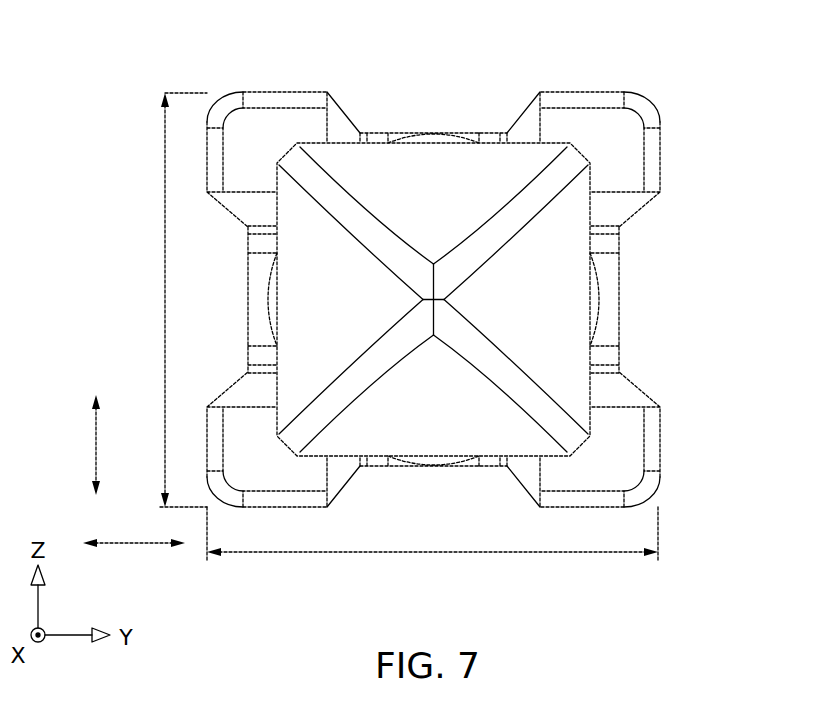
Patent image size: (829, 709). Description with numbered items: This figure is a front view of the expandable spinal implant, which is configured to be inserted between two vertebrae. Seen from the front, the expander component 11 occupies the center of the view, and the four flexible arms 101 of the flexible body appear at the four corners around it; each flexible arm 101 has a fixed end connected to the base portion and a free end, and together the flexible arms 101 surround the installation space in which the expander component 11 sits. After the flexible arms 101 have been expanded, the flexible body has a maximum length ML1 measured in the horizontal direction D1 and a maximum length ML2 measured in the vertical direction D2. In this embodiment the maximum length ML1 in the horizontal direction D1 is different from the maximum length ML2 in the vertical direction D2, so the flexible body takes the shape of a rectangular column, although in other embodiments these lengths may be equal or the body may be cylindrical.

The flexible arm 101 is at (582, 103).
The expander component 11 is at (562, 296).
The maximum length in the horizontal direction ML1 is at (432, 546).
The maximum length in the vertical direction ML2 is at (157, 300).
The horizontal direction D1 is at (134, 556).
The vertical direction D2 is at (78, 445).